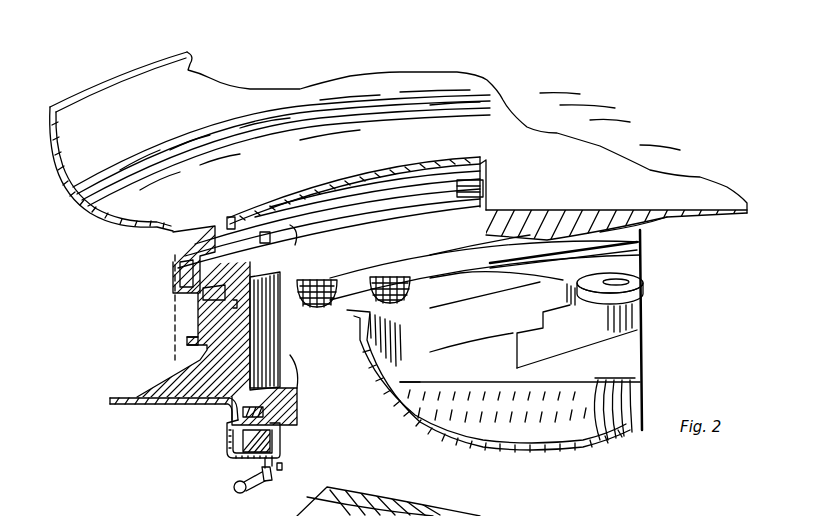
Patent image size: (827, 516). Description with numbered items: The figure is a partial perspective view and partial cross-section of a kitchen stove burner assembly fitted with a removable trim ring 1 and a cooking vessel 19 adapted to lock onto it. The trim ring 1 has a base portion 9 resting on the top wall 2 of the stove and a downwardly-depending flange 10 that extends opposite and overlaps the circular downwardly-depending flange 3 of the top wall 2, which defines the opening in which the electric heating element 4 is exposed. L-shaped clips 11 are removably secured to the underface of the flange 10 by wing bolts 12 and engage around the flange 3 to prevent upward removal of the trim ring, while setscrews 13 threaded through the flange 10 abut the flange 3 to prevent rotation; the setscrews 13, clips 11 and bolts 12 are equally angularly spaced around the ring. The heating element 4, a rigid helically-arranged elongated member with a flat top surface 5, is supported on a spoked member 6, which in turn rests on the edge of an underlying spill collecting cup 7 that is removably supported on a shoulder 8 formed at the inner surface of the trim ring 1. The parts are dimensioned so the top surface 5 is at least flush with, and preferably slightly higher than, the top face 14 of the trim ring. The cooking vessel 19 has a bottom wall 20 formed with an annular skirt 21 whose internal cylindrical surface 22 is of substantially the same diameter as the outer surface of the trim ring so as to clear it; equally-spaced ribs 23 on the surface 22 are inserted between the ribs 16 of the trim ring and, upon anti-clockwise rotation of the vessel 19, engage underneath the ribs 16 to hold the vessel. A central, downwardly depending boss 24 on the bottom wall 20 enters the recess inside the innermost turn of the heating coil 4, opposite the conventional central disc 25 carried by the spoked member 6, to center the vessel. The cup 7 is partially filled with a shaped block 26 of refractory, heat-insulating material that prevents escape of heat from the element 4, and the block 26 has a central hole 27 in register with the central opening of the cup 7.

The trim ring 1 is at (160, 372).
The top wall 2 is at (118, 407).
The downwardly-depending flange 3 is at (222, 435).
The electric heating element 4 is at (543, 212).
The flat top surface 5 is at (500, 236).
The spoked member 6 is at (657, 205).
The spill collecting cup 7 is at (407, 410).
The shoulder 8 is at (290, 355).
The base portion 9 is at (150, 407).
The downwardly-depending flange 10 is at (285, 447).
The L-shaped clips 11 is at (230, 457).
The wing bolts 12 is at (257, 492).
The setscrews 13 is at (280, 400).
The top face 14 is at (233, 304).
The ribs 16 is at (180, 340).
The cooking vessel 19 is at (410, 85).
The bottom wall 20 is at (313, 190).
The annular skirt 21 is at (172, 255).
The internal cylindrical surface 22 is at (483, 187).
The ribs 23 is at (485, 210).
The boss 24 is at (643, 228).
The central disc 25 is at (645, 285).
The shaped block 26 is at (590, 383).
The central hole 27 is at (638, 392).